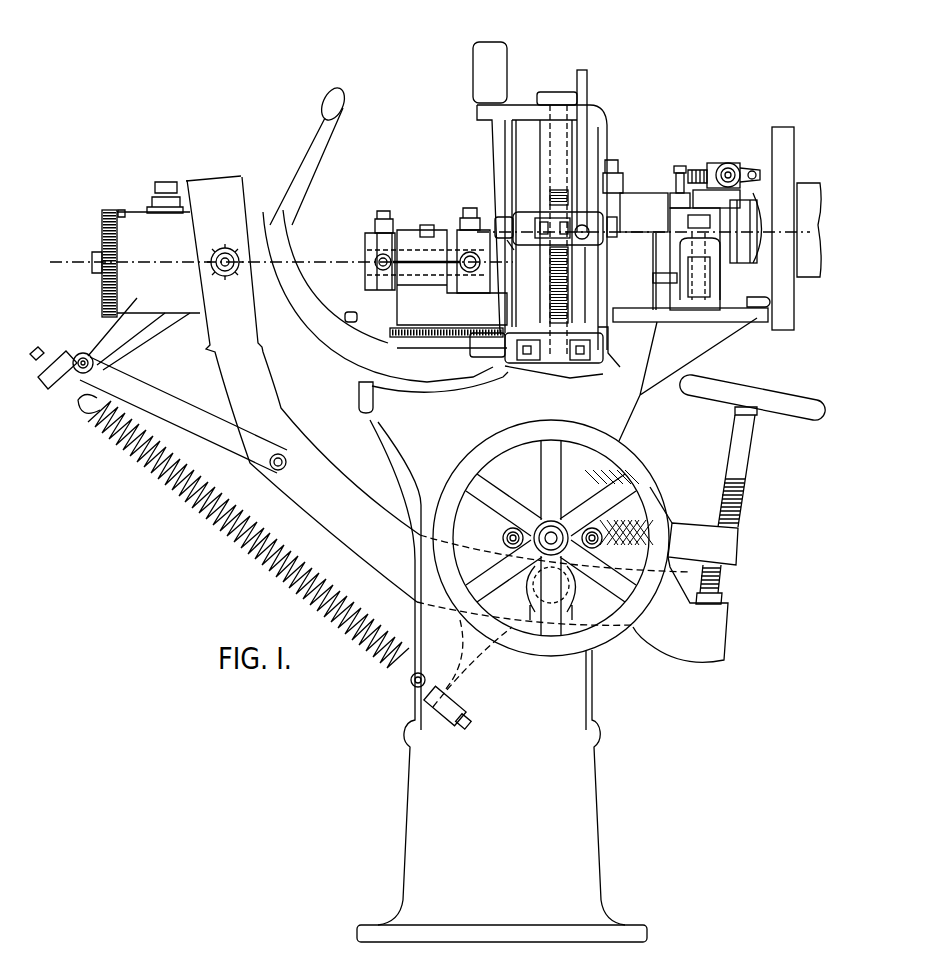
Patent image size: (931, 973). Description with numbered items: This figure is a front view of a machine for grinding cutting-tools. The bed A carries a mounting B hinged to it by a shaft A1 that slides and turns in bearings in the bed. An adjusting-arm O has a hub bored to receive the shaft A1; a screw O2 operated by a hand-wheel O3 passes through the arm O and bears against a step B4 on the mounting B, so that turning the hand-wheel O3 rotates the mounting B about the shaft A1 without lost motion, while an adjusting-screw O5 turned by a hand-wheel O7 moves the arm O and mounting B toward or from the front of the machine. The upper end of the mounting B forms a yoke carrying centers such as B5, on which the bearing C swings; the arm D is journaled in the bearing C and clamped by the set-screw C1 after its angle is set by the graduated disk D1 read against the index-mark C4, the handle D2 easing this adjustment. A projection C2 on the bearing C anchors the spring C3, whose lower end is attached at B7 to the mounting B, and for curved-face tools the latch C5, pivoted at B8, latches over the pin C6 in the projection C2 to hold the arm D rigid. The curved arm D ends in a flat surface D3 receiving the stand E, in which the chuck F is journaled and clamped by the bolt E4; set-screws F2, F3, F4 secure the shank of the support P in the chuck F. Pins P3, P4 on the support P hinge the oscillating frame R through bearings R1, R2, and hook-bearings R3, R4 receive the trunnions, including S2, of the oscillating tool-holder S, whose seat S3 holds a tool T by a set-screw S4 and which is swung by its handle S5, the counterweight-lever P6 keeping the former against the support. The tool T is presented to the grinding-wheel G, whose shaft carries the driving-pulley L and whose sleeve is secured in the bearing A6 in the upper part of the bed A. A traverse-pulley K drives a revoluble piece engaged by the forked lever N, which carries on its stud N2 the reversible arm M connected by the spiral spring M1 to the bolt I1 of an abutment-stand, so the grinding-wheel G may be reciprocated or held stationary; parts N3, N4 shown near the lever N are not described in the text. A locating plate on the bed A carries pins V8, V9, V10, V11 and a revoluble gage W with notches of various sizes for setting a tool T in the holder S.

The bed A is at (557, 630).
The shaft A1 is at (611, 585).
The bearing A6 is at (650, 203).
The mounting B is at (457, 419).
The step B4 is at (722, 600).
The center B5 is at (233, 247).
The spring attachment point B7 is at (442, 717).
The latch pivot B8 is at (273, 470).
The bearing C is at (139, 321).
The set-screw C1 is at (173, 157).
The projection C2 is at (63, 405).
The spring C3 is at (243, 531).
The index-mark C4 is at (118, 210).
The latch C5 is at (153, 402).
The pin C6 is at (83, 355).
The arm D is at (378, 311).
The graduated disk D1 is at (102, 233).
The handle D2 is at (323, 123).
The flat surface D3 is at (392, 333).
The stand E is at (281, 278).
The bolt E4 is at (428, 210).
The chuck F is at (427, 267).
The set-screw F2 is at (468, 208).
The set-screw F3 is at (384, 211).
The set-screw F4 is at (376, 262).
The grinding-wheel G is at (549, 297).
The bolt I1 is at (677, 164).
The traverse-pulley K is at (800, 305).
The driving-pulley L is at (809, 230).
The reversible arm M is at (762, 150).
The spiral spring M1 is at (703, 146).
The forked lever N is at (643, 251).
The stud N2 is at (718, 170).
The valve part N3 is at (747, 236).
The valve part N4 is at (774, 217).
The adjusting-arm O is at (703, 544).
The screw O2 is at (740, 457).
The hand-wheel O3 is at (753, 397).
The adjusting-screw O5 is at (560, 502).
The hand-wheel O7 is at (493, 445).
The support P is at (494, 152).
The pin P3 is at (487, 346).
The pin P4 is at (624, 347).
The counterweight-lever P6 is at (503, 30).
The oscillating frame R is at (600, 132).
The bearing R1 is at (489, 374).
The bearing R2 is at (588, 373).
The hook-bearing R3 is at (509, 242).
The hook-bearing R4 is at (612, 232).
The oscillating tool-holder S is at (530, 222).
The trunnion S2 is at (614, 228).
The seat S3 is at (685, 257).
The set-screw S4 is at (698, 232).
The handle S5 is at (594, 78).
The tool T is at (567, 197).
The pin V8 is at (690, 308).
The pin V9 is at (669, 324).
The pin V10 is at (727, 324).
The pin V11 is at (763, 329).
The revoluble gage W is at (651, 286).